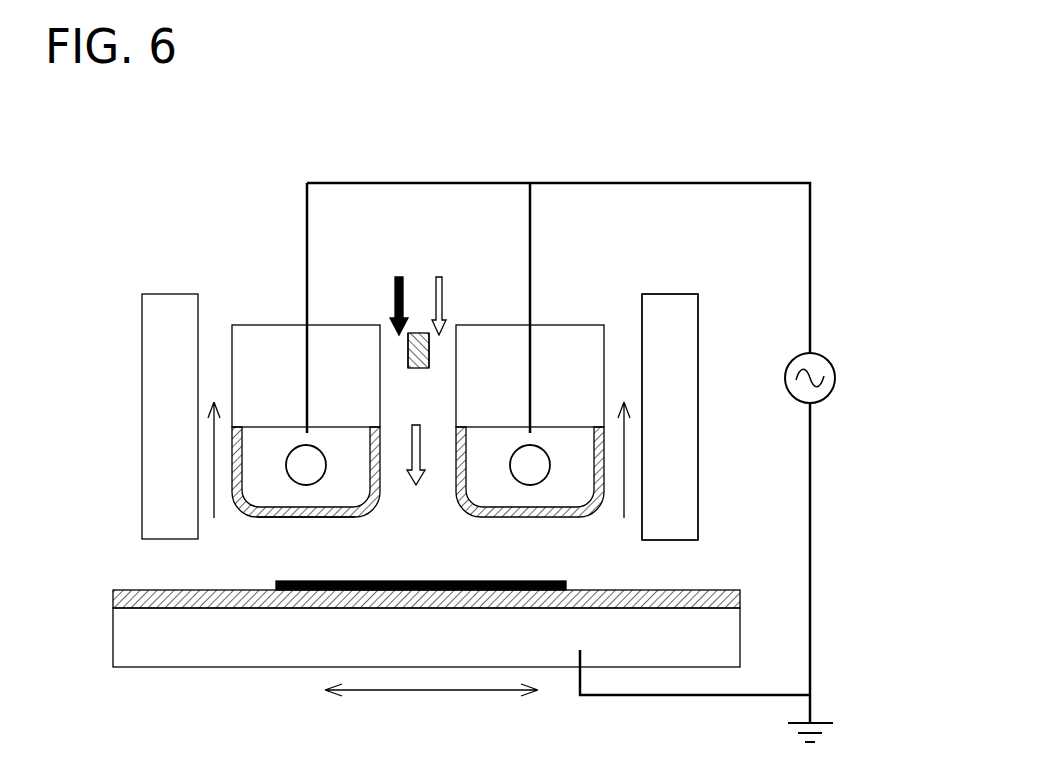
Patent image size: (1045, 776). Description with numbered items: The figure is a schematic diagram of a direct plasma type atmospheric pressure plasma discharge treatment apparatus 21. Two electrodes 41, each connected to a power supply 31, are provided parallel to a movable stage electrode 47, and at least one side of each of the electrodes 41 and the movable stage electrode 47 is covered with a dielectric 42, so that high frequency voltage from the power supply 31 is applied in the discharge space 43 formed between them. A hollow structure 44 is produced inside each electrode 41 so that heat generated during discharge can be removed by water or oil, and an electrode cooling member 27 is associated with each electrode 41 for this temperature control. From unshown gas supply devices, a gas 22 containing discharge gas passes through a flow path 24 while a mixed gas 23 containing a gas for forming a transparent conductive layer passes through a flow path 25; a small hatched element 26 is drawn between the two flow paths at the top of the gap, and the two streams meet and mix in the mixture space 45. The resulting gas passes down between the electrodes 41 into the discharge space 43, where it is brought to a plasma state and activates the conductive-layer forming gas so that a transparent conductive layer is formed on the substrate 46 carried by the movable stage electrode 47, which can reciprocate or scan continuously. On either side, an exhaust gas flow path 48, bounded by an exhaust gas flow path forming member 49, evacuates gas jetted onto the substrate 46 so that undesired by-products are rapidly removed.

The atmospheric pressure plasma discharge treatment apparatus 21 is at (577, 145).
The gas containing discharge gas 22 is at (393, 275).
The mixed gas 23 is at (442, 275).
The flow path 24 is at (400, 353).
The flow path 25 is at (435, 353).
The partition 26 is at (419, 333).
The electrode cooling member 27 is at (262, 345).
The power supply 31 is at (835, 377).
The electrode 41 is at (348, 487).
The dielectric 42 is at (305, 517).
The discharge space 43 is at (258, 541).
The hollow structure 44 is at (530, 487).
The mixture space 45 is at (440, 460).
The substrate 46 is at (568, 578).
The movable stage electrode 47 is at (241, 643).
The exhaust gas flow path 48 is at (620, 347).
The exhaust gas flow path forming member 49 is at (682, 445).